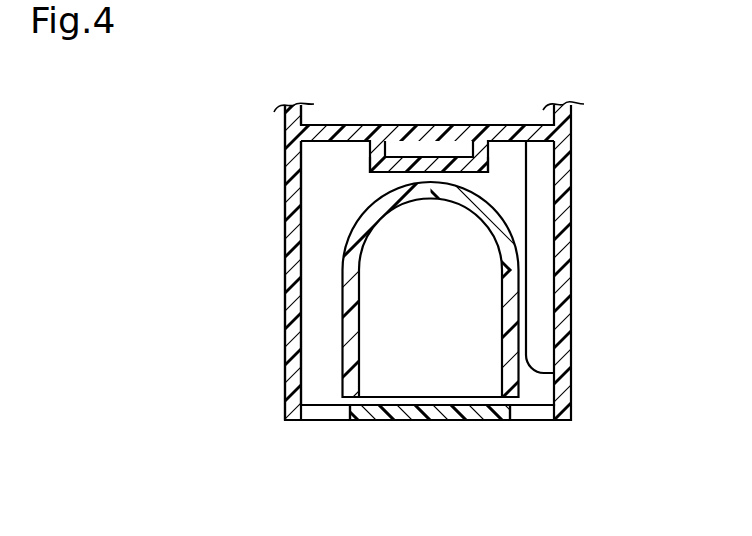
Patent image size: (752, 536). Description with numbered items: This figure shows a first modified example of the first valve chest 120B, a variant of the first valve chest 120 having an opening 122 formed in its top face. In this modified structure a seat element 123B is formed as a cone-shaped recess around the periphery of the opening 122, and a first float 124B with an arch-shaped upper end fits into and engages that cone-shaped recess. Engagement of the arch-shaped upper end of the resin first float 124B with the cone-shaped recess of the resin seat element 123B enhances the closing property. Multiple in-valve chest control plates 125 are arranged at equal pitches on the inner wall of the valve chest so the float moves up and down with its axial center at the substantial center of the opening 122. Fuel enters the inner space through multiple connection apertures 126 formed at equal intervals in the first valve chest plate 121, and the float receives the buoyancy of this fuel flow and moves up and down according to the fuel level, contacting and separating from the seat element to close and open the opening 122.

The first valve chest 120 is at (317, 353).
The first valve chest 120B is at (328, 243).
The first valve chest plate 121 is at (455, 415).
The opening 122 is at (467, 135).
The seat element 123B is at (480, 172).
The first float 124B is at (468, 292).
The in-valve chest control plate 125 is at (543, 348).
The connection aperture 126 is at (328, 413).